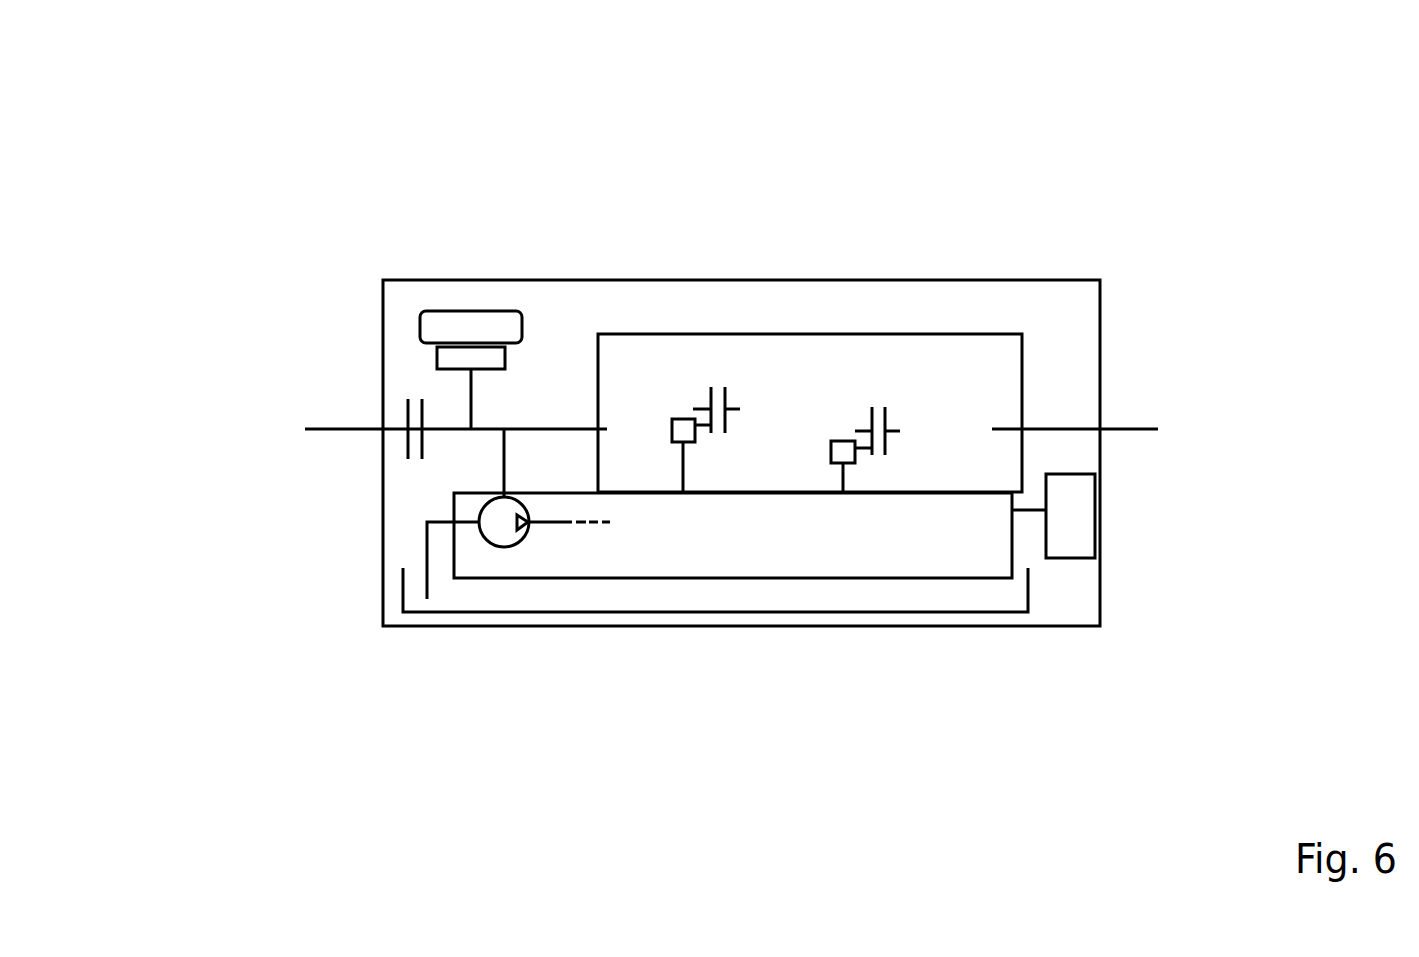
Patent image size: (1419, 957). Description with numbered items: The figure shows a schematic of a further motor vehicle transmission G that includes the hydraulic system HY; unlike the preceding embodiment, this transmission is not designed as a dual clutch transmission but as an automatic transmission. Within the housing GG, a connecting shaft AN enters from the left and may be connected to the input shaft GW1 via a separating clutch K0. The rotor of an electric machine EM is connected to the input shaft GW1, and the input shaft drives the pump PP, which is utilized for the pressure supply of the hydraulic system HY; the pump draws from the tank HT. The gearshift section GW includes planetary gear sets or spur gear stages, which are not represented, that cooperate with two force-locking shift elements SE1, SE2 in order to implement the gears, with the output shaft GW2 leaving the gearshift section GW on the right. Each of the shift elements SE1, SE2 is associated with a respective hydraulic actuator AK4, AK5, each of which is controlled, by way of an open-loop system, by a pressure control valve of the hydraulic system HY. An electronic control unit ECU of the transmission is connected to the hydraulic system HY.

The motor vehicle transmission G is at (1078, 215).
The gearshift section GW is at (842, 334).
The hydraulic system HY is at (783, 578).
The electronic control unit ECU is at (1069, 558).
The connecting shaft AN is at (341, 425).
The separating clutch K0 is at (408, 385).
The input shaft GW1 is at (453, 432).
The electric machine EM is at (478, 300).
The housing GG is at (518, 280).
The pump PP is at (486, 555).
The tank HT is at (842, 612).
The hydraulic actuator AK4 is at (672, 447).
The shift element SE1 is at (735, 395).
The hydraulic actuator AK5 is at (857, 472).
The shift element SE2 is at (900, 412).
The output shaft GW2 is at (1130, 428).